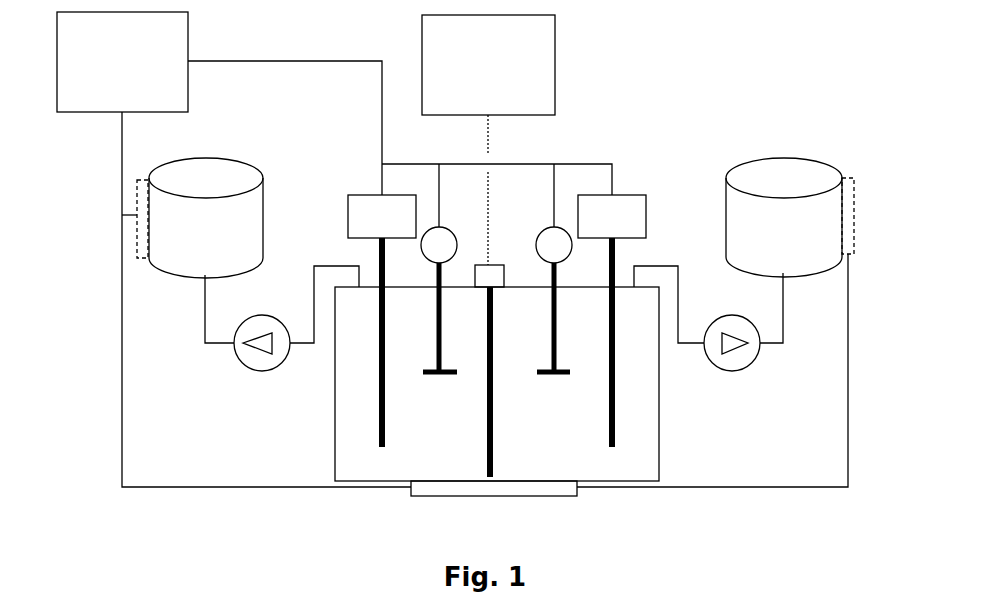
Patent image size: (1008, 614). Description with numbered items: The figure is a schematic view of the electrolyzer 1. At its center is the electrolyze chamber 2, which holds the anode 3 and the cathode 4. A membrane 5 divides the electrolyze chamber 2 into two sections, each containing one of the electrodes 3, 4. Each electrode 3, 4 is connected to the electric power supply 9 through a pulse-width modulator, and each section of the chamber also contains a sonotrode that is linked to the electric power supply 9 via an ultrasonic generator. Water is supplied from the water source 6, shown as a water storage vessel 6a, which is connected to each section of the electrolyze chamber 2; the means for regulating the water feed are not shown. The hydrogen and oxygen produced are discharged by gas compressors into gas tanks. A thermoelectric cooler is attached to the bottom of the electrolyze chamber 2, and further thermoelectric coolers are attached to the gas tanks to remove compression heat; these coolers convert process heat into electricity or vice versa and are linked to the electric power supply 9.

The electrolyzer 1 is at (485, 323).
The electrolyze chamber 2 is at (333, 398).
The anode 3 is at (393, 342).
The cathode 4 is at (600, 342).
The membrane 5 is at (494, 371).
The water source 6 is at (488, 140).
The water storage vessel 6a is at (488, 140).
The electric power supply 9 is at (334, 103).